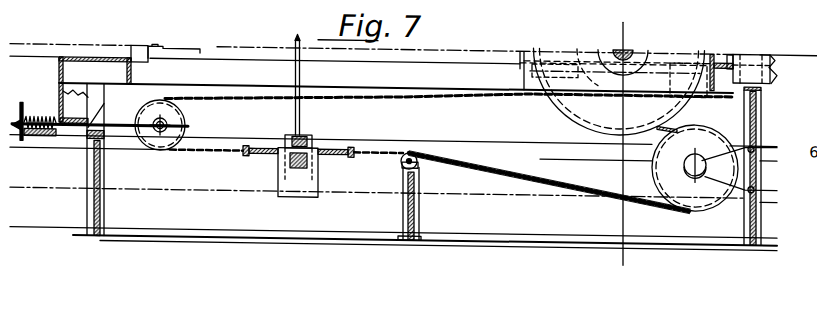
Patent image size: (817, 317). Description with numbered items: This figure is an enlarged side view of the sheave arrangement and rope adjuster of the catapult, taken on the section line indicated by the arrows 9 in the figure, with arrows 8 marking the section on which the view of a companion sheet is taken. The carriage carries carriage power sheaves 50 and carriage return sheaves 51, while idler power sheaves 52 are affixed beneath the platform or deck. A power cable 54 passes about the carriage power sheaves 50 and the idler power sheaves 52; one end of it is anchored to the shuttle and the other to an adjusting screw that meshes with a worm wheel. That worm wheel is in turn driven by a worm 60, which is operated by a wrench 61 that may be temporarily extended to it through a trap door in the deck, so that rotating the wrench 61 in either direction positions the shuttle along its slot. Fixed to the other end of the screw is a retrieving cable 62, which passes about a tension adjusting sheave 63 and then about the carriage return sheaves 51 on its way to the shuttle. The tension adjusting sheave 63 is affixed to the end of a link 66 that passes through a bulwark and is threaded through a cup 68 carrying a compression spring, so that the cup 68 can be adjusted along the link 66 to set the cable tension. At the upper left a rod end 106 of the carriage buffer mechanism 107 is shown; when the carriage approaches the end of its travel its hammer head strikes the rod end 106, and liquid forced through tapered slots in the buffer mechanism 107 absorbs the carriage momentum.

The section line 8- 8 is at (24, 50).
The section line 9- 9 is at (620, 24).
The carriage power sheaves 50 is at (572, 110).
The carriage return sheaves 51 is at (638, 80).
The idler power sheaves 52 is at (690, 188).
The power cable 54 is at (500, 170).
The worm 60 is at (315, 139).
The wrench 61 is at (302, 72).
The retrieving cable 62 is at (247, 99).
The tension adjusting sheave 63 is at (173, 116).
The link 66 is at (118, 126).
The cup 68 is at (32, 117).
The rod end 106 is at (190, 48).
The carriage buffer mechanism 107 is at (161, 36).